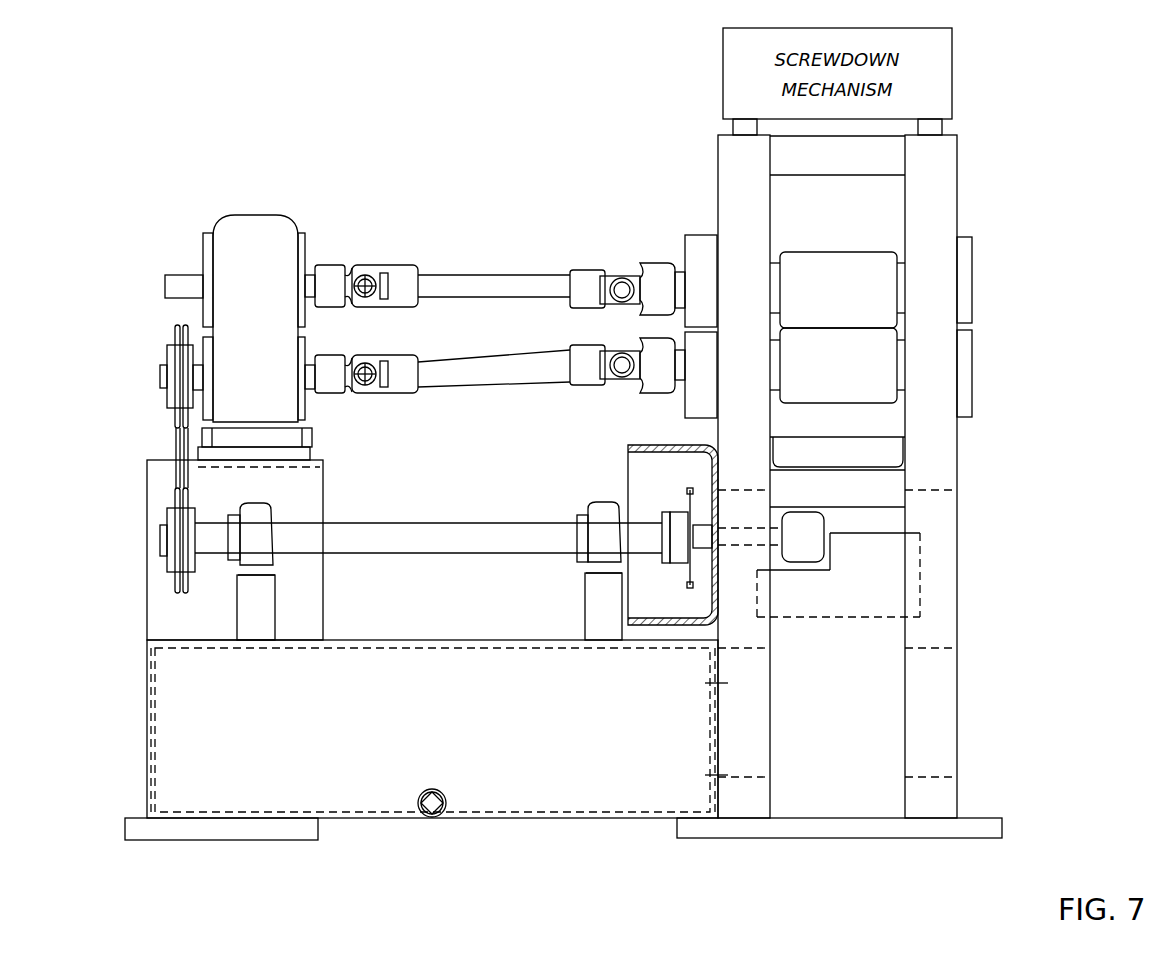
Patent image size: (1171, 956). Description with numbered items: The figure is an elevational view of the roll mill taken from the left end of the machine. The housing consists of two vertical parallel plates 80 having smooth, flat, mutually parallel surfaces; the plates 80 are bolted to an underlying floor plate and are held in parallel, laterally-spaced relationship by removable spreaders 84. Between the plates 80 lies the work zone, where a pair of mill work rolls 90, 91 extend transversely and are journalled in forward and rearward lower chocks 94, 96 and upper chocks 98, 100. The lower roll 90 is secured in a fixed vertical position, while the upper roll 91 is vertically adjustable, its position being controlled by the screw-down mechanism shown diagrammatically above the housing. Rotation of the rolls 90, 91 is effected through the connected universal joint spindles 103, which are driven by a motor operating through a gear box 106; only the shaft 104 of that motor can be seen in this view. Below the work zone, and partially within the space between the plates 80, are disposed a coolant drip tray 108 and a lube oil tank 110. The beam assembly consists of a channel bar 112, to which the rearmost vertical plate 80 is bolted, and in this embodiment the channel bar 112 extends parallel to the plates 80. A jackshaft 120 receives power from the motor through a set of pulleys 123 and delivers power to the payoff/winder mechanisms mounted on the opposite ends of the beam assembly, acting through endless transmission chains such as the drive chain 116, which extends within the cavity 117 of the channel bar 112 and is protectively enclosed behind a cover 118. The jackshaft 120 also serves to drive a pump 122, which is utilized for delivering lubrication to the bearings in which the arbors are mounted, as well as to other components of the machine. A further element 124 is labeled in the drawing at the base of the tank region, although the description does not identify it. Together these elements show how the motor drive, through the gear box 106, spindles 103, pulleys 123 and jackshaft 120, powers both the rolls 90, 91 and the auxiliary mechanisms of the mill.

The parallel plates 80 is at (903, 740).
The removable spreaders 84 is at (820, 167).
The lower mill work roll 90 is at (828, 252).
The upper mill work roll 91 is at (826, 403).
The forward lower chock 94 is at (972, 414).
The rearward lower chock 96 is at (685, 416).
The forward upper chock 98 is at (972, 240).
The rearward upper chock 100 is at (685, 240).
The universal joint spindles 103 is at (495, 370).
The motor shaft 104 is at (252, 308).
The gear box 106 is at (258, 240).
The coolant drip tray 108 is at (832, 452).
The lube oil tank 110 is at (826, 604).
The channel bar 112 is at (672, 628).
The drive chain 116 is at (688, 490).
The cavity 117 is at (705, 590).
The cover 118 is at (622, 605).
The jackshaft 120 is at (408, 540).
The pump 122 is at (810, 553).
The pulleys 123 is at (175, 330).
The lubricant tank 124 is at (525, 800).